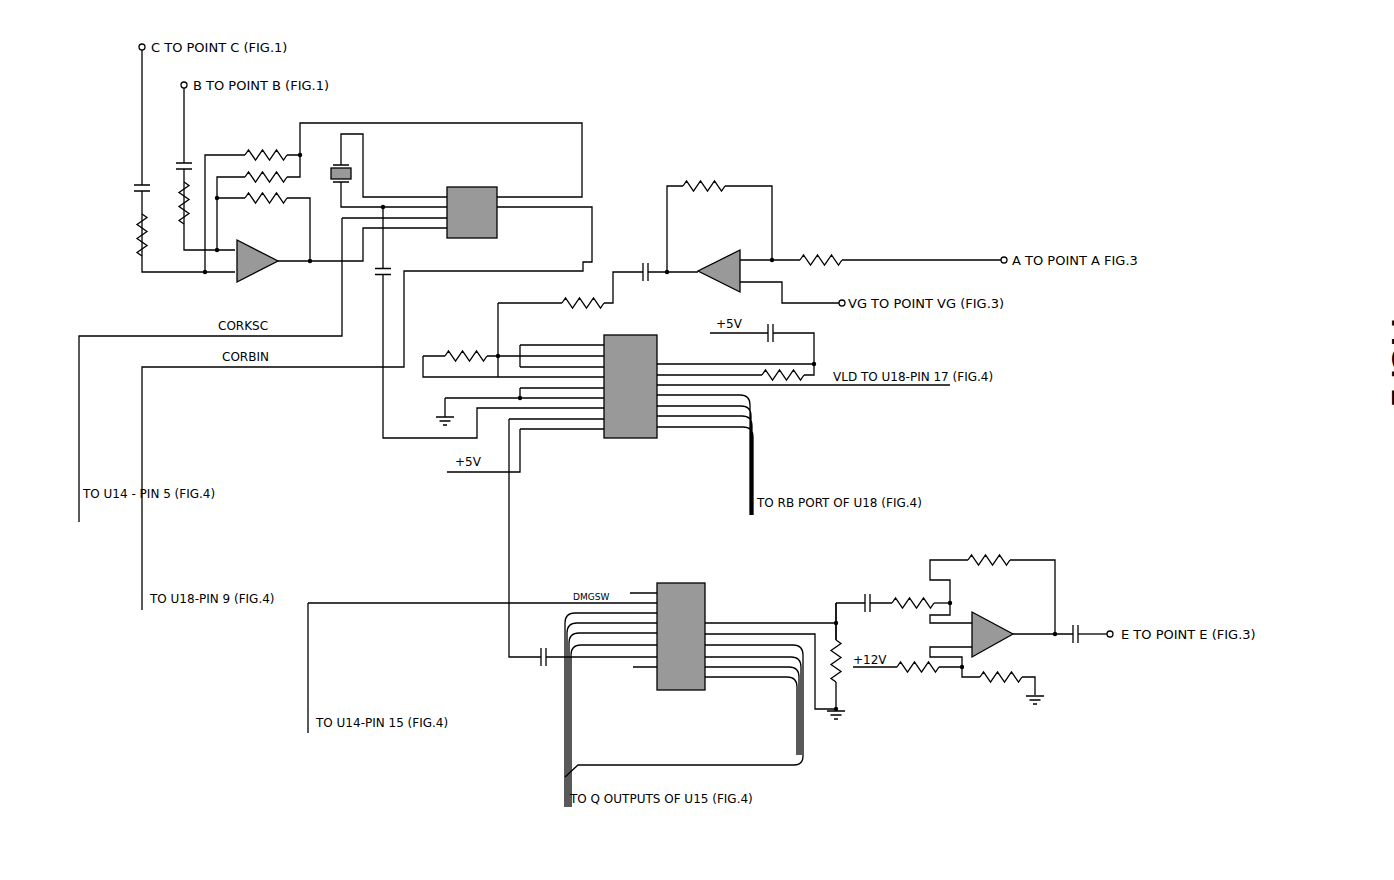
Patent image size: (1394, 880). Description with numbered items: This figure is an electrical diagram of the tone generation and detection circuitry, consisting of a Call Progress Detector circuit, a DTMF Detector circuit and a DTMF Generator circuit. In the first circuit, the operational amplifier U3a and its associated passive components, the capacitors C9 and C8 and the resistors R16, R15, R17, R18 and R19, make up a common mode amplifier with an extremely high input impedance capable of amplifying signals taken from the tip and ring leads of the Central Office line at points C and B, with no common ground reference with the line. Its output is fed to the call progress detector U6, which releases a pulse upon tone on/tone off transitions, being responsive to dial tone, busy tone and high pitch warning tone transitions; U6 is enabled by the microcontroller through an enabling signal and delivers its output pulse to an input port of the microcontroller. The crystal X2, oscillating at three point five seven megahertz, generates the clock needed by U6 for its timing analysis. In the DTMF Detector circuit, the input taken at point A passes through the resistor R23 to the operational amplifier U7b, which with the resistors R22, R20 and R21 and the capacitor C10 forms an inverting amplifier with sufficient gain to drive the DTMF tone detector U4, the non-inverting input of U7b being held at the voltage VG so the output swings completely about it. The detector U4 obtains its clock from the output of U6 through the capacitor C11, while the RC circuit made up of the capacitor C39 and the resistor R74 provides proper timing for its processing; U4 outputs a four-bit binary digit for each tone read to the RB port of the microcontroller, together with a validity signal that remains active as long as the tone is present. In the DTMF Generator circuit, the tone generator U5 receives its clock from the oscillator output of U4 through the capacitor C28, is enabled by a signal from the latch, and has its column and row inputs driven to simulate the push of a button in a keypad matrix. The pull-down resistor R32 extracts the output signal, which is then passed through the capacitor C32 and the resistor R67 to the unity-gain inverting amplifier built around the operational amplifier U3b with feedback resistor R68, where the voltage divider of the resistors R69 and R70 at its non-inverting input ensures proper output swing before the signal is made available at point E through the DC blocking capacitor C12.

The capacitor C9 is at (118, 195).
The resistor R16 is at (107, 235).
The capacitor C8 is at (183, 155).
The resistor R15 is at (176, 211).
The resistor R17 is at (393, 197).
The resistor R18 is at (258, 202).
The resistor R19 is at (263, 228).
The operational amplifier U3a is at (260, 261).
The crystal X2 is at (385, 170).
The call progress detector U6 is at (471, 214).
The capacitor C11 is at (489, 322).
The resistor R20 is at (570, 299).
The resistor R21 is at (512, 340).
The capacitor C10 is at (660, 281).
The resistor R22 is at (720, 212).
The operational amplifier U7b is at (757, 271).
The resistor R23 is at (886, 251).
The capacitor C39 is at (776, 340).
The DTMF tone detector U4 is at (693, 417).
The resistor R74 is at (735, 365).
The capacitor C28 is at (574, 554).
The DTMF tone generator U5 is at (700, 686).
The pull-down resistor R32 is at (786, 359).
The capacitor C32 is at (868, 611).
The resistor R67 is at (915, 597).
The resistor R68 is at (993, 595).
The resistor R69 is at (908, 676).
The resistor R70 is at (1002, 688).
The operational amplifier U3b is at (1017, 633).
The DC blocking capacitor C12 is at (1094, 625).